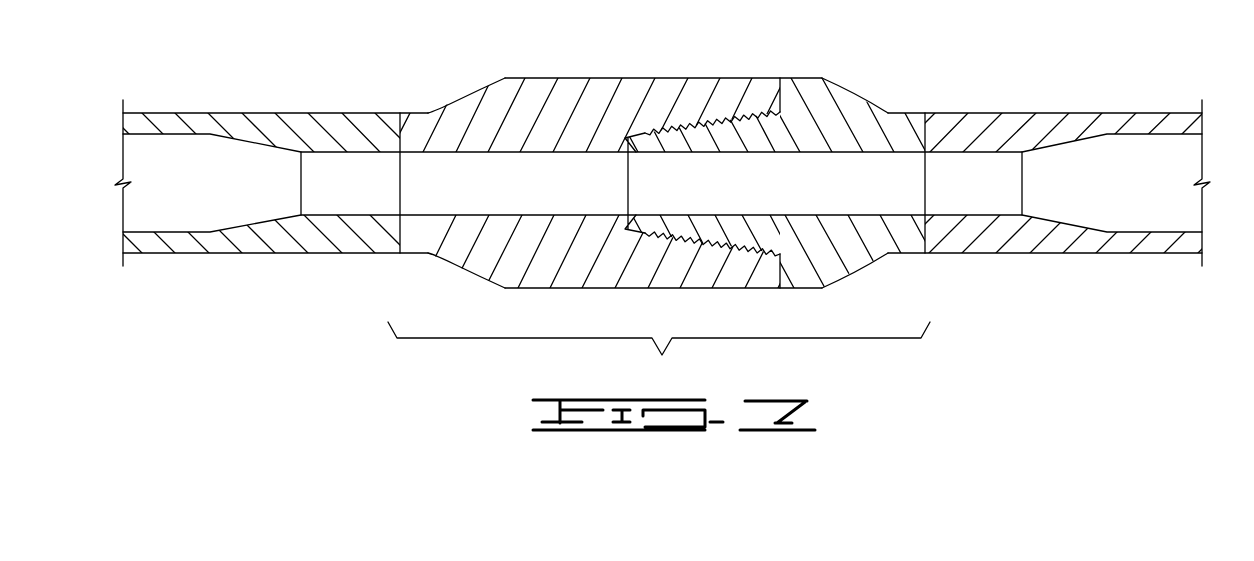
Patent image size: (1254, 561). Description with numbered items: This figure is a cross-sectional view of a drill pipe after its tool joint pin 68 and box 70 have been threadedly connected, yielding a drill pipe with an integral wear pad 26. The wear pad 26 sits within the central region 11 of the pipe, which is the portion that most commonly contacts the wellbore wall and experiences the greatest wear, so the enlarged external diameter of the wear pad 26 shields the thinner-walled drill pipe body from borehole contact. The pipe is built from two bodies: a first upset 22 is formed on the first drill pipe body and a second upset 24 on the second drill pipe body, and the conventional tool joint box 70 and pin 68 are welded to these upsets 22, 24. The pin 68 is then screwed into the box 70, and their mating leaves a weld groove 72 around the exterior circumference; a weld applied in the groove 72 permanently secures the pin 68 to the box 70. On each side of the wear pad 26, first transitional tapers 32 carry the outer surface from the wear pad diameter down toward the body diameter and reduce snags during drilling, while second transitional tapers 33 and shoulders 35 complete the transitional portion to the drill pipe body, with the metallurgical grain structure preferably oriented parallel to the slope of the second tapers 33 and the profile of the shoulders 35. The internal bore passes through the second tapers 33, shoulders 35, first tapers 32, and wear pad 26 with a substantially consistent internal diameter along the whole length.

The central region 11 is at (659, 353).
The first upset 22 is at (330, 253).
The second upset 24 is at (1013, 112).
The integral wear pad 26 is at (578, 78).
The first transitional tapers 32 is at (458, 100).
The second transitional tapers 33 is at (285, 112).
The shoulders 35 is at (653, 184).
The tool joint pin 68 is at (875, 259).
The tool joint box 70 is at (462, 266).
The weld groove 72 is at (780, 78).